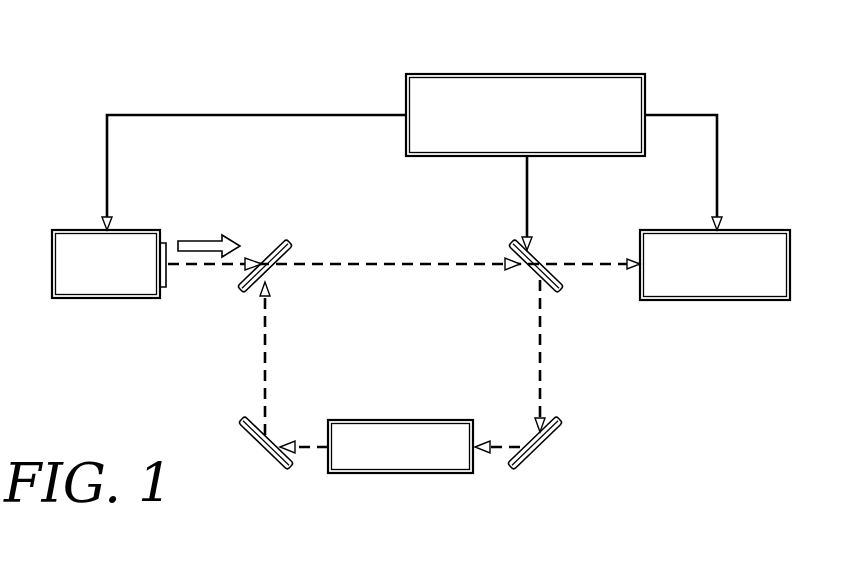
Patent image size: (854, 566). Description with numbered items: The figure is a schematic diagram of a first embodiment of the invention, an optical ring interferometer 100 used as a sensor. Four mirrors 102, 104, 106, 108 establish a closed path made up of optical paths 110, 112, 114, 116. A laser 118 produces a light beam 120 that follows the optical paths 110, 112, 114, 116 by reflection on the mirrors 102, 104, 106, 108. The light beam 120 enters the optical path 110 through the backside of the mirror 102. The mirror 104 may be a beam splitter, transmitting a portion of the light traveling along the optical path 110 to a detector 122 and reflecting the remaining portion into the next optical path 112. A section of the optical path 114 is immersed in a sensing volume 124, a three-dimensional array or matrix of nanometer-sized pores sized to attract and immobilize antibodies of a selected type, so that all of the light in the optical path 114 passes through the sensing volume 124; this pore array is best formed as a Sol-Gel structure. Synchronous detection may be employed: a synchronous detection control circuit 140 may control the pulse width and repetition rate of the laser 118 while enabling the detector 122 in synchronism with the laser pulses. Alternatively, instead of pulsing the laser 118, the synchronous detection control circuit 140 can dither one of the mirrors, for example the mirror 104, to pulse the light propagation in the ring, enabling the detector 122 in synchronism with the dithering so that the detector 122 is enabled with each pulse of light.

The optical ring interferometer 100 is at (186, 368).
The mirror 102 is at (276, 250).
The mirror 104 is at (511, 256).
The mirror 106 is at (527, 462).
The mirror 108 is at (276, 466).
The optical path 110 is at (362, 262).
The optical path 112 is at (541, 342).
The optical path 114 is at (310, 447).
The optical path 116 is at (266, 342).
The laser 118 is at (76, 245).
The light beam 120 is at (198, 244).
The detector 122 is at (768, 245).
The sensing volume 124 is at (417, 472).
The synchronous detection control circuit 140 is at (618, 88).